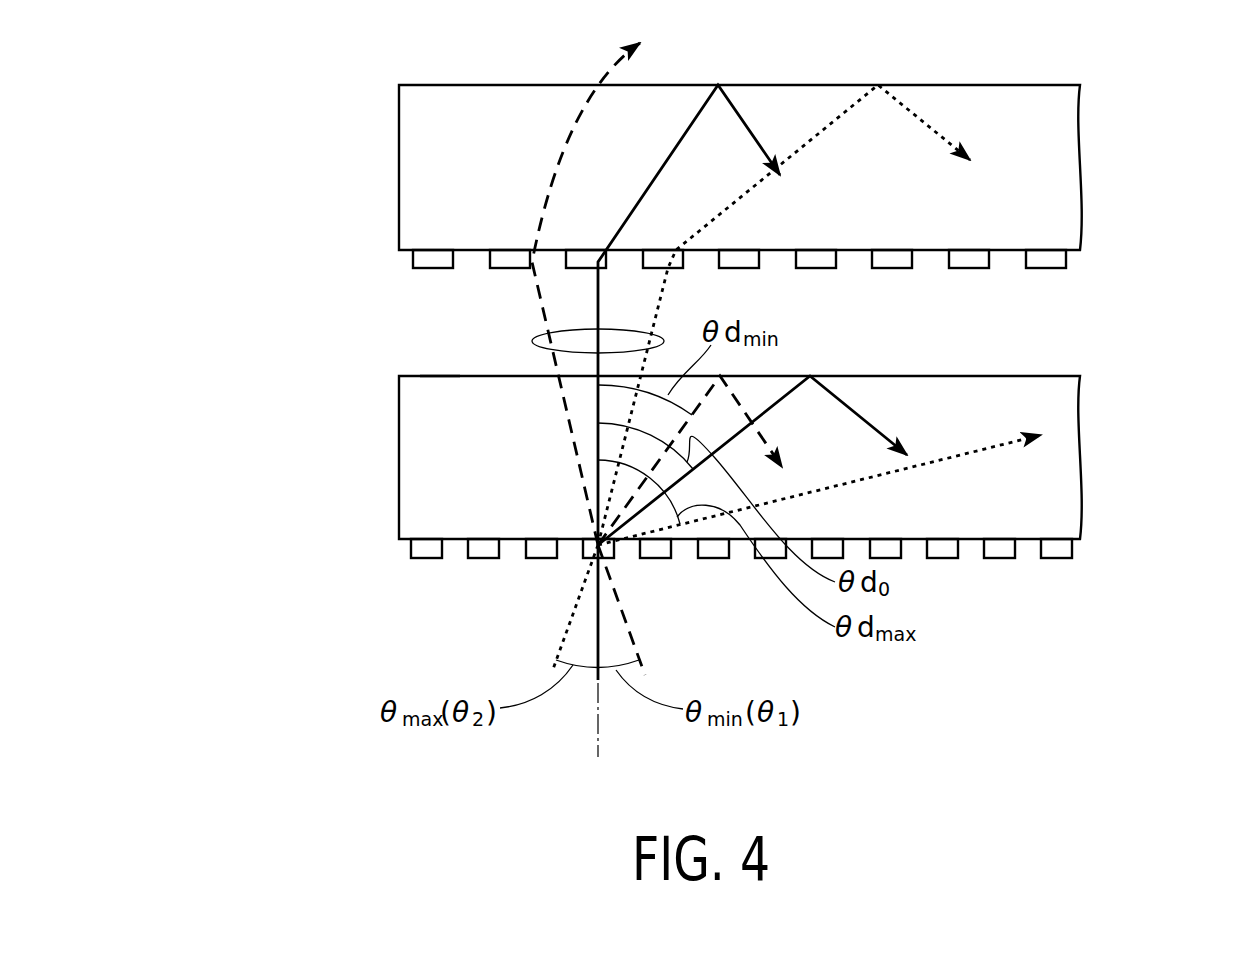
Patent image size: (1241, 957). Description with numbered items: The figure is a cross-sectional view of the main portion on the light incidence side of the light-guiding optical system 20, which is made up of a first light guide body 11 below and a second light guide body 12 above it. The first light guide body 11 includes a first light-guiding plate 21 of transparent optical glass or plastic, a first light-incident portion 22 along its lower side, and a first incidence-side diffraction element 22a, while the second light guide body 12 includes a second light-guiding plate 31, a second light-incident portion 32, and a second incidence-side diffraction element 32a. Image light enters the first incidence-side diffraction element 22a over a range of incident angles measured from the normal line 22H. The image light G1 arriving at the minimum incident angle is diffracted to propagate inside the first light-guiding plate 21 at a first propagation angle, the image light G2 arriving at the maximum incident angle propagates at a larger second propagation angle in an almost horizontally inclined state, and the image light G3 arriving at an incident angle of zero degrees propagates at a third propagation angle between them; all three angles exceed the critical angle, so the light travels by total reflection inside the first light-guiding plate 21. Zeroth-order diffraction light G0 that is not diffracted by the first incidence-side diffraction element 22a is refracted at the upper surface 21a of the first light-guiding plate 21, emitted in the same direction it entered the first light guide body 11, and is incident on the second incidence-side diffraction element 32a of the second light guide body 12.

The light-guiding optical system 20 is at (261, 153).
The second light guide body 12 is at (386, 189).
The first light guide body 11 is at (382, 412).
The second light-guiding plate 31 is at (1065, 150).
The second light-incident portion 32 is at (1088, 268).
The second incidence-side diffraction element 32a is at (982, 258).
The first light-guiding plate 21 is at (1067, 443).
The upper surface 21a is at (435, 376).
The first light-incident portion 22 is at (1088, 561).
The first incidence-side diffraction element 22a is at (1002, 553).
The normal line 22H is at (597, 476).
The zeroth-order diffraction light G0 is at (548, 337).
The image light G1 is at (637, 643).
The image light G2 is at (562, 640).
The image light G3 is at (600, 623).